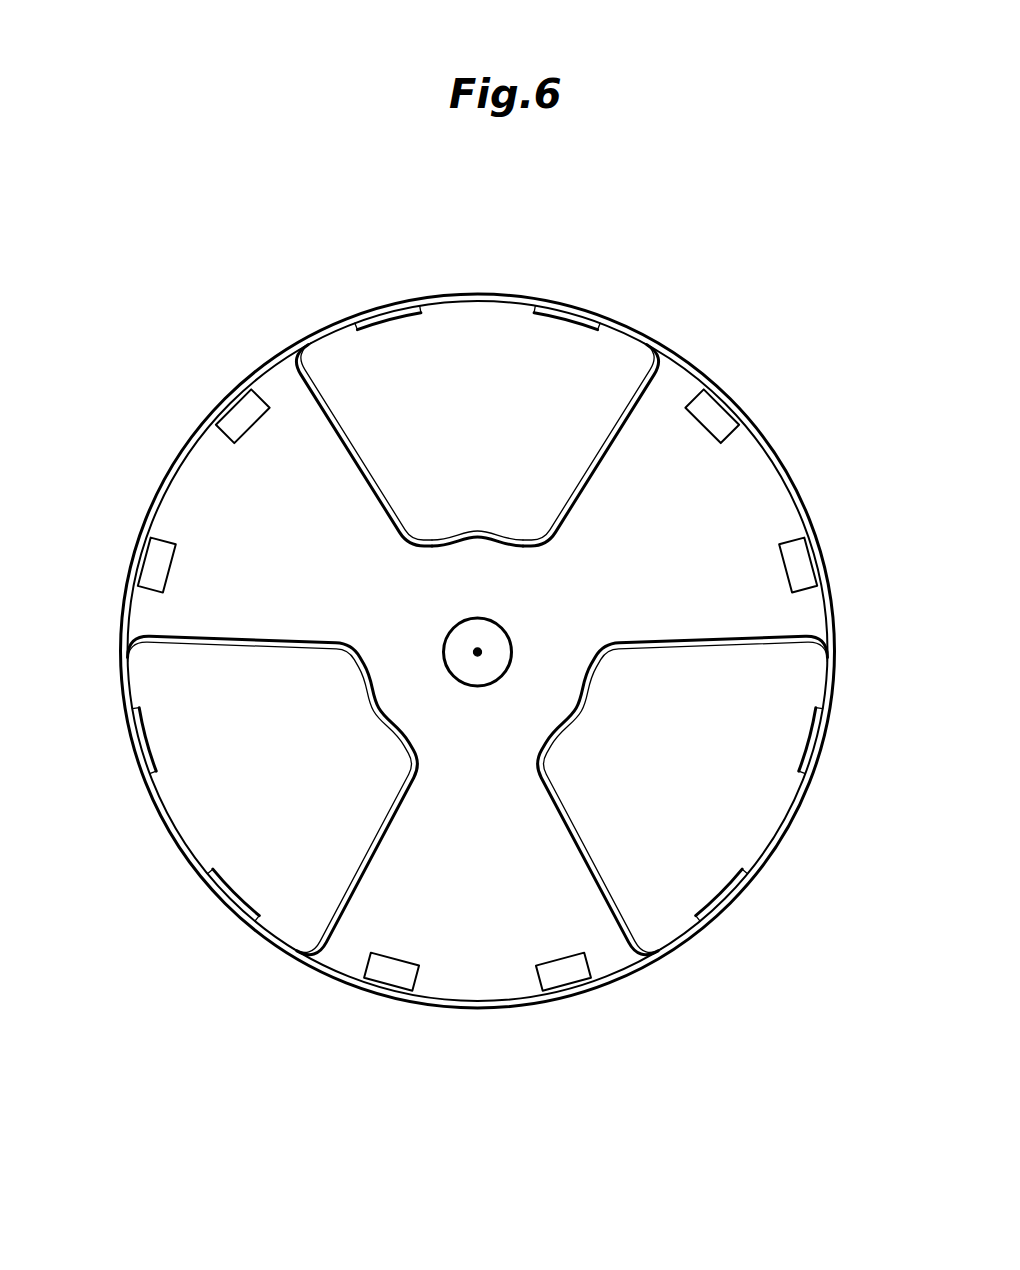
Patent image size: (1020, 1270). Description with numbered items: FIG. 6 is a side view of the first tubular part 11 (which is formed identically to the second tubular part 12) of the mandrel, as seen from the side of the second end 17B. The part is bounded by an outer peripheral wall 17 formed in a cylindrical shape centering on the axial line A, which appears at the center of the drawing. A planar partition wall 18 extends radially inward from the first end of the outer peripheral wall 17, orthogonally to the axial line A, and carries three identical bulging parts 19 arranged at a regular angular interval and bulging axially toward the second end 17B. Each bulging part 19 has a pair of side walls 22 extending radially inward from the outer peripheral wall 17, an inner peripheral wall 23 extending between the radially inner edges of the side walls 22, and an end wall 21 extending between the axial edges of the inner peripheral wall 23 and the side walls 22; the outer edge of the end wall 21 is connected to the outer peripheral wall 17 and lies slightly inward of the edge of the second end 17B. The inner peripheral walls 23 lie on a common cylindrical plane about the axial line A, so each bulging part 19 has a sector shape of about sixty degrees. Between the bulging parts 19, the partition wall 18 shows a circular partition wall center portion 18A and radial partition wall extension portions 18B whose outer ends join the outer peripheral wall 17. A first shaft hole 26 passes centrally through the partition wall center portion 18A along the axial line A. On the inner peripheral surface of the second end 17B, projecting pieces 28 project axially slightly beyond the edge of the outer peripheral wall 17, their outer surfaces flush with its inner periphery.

The first tubular part 11 is at (448, 631).
The second tubular part 12 is at (448, 651).
The outer peripheral wall 17 is at (178, 462).
The second end 17B is at (157, 495).
The partition wall 18 is at (297, 449).
The partition wall center portion 18A is at (552, 693).
The partition wall extension portion 18B is at (466, 940).
The bulging part 19 is at (489, 421).
The end wall 21 is at (484, 318).
The side wall 22 is at (375, 497).
The inner peripheral wall 23 is at (468, 548).
The first shaft hole 26 is at (478, 687).
The projecting piece 28 is at (387, 320).
The axial line A is at (480, 651).